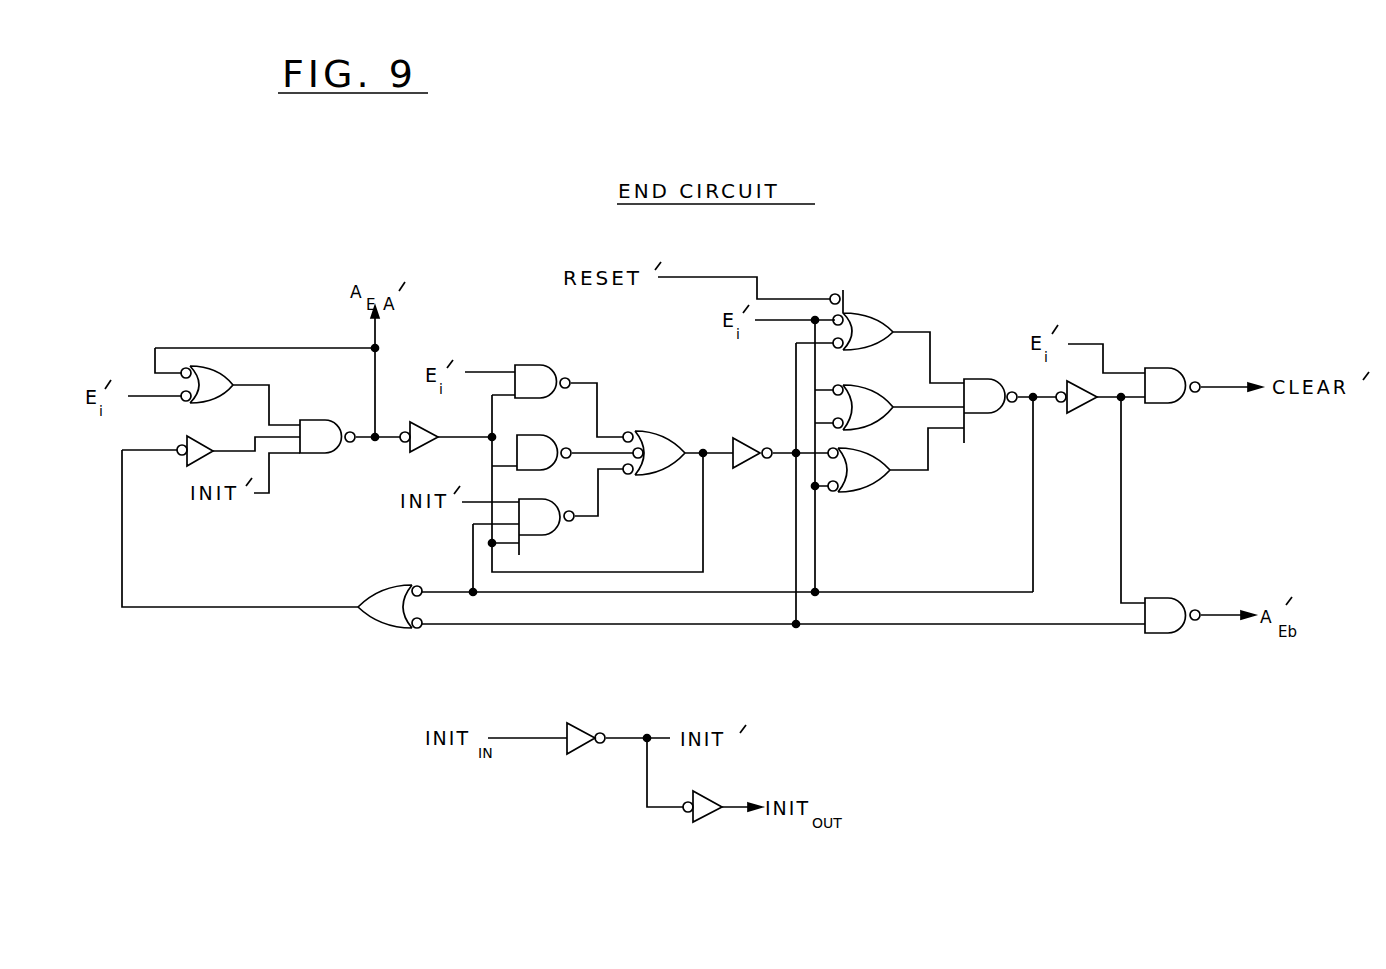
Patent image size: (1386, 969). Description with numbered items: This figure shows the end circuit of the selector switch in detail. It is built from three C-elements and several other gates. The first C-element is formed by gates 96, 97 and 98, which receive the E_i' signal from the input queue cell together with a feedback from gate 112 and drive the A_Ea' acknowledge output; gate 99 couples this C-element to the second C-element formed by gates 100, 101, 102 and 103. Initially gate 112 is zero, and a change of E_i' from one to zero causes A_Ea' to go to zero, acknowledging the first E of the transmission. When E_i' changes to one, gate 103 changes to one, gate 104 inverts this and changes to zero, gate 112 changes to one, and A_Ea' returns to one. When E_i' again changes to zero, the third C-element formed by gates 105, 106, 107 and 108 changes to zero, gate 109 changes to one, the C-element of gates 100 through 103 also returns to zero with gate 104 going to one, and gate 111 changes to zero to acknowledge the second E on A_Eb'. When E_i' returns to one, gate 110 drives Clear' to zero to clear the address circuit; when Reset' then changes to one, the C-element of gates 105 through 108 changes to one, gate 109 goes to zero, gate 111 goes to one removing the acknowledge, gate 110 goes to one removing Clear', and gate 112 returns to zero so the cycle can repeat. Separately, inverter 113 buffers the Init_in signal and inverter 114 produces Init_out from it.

The C-element gate 96 is at (236, 378).
The C-element gate 97 is at (199, 436).
The C-element gate 98 is at (318, 453).
The gate 99 is at (430, 440).
The C-element gate 100 is at (560, 368).
The C-element gate 101 is at (562, 418).
The C-element gate 102 is at (545, 536).
The C-element gate 103 is at (660, 437).
The gate 104 is at (746, 468).
The C-element gate 105 is at (865, 312).
The C-element gate 106 is at (892, 366).
The C-element gate 107 is at (868, 483).
The C-element gate 108 is at (985, 413).
The gate 109 is at (1085, 413).
The gate 110 is at (1168, 403).
The gate 111 is at (1165, 633).
The gate 112 is at (392, 625).
The buffer gate 113 is at (583, 754).
The buffer gate 114 is at (710, 820).